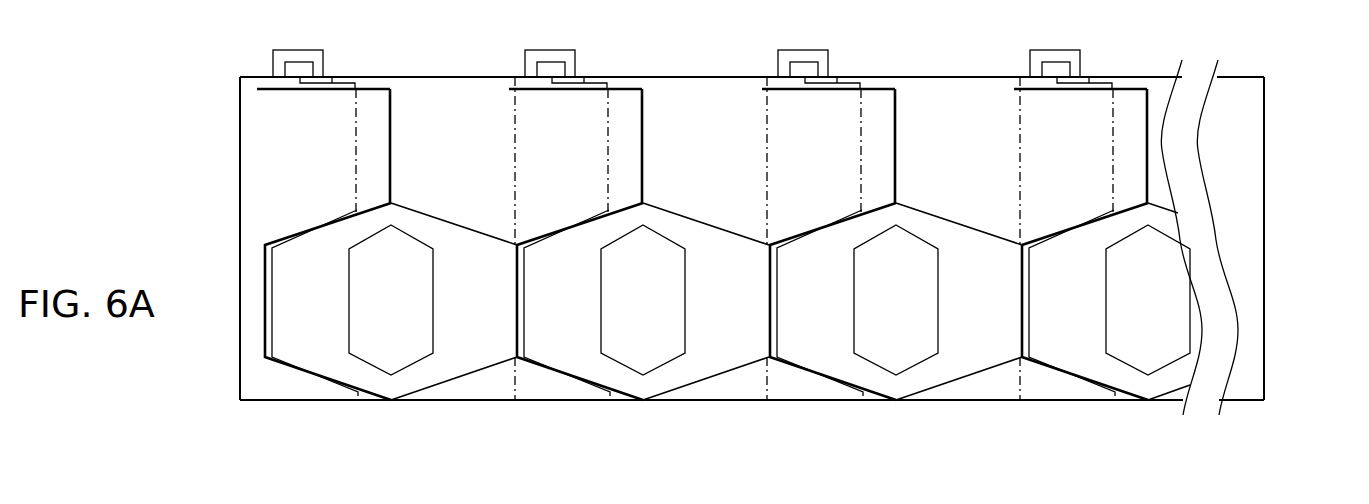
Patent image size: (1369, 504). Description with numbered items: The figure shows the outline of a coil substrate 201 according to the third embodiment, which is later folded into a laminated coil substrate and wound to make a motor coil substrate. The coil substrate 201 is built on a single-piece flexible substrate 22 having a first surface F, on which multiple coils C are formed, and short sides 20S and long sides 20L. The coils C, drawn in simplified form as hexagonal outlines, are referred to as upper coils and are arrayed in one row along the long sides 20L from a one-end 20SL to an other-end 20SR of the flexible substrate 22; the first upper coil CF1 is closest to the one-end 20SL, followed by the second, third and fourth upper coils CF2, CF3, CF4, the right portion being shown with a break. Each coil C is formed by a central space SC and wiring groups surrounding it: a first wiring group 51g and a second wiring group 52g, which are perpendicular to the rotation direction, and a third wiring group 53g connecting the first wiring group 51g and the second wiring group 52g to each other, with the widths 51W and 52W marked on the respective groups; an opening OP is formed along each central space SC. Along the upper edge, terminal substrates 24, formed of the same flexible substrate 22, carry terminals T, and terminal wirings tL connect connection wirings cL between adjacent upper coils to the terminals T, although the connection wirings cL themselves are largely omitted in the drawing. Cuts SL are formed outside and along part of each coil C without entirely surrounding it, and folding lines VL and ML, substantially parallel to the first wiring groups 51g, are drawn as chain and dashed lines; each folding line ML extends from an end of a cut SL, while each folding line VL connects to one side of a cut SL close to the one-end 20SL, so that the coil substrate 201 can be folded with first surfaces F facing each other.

The short sides 20S is at (748, 266).
The one-end 20SL is at (240, 192).
The other-end 20SR is at (1285, 244).
The long sides 20L is at (371, 400).
The flexible substrate 22 is at (980, 77).
The coil substrate 201 is at (1130, 77).
The terminal substrates 24 is at (306, 62).
The terminals T is at (298, 62).
The terminal wirings tL is at (298, 83).
The connection wirings cL is at (333, 76).
The folding lines ML is at (360, 135).
The folding lines VL is at (513, 117).
The cuts SL is at (585, 232).
The first surface F is at (922, 97).
The first wiring group 51g is at (270, 283).
The second wiring group 52g is at (483, 273).
The third wiring group 53g is at (340, 215).
The width of first grid portion 51W is at (525, 260).
The width of second grid portion 52W is at (520, 323).
The central space SC is at (769, 364).
The opening OP is at (648, 418).
The coils C is at (799, 430).
The 1st upper coil CF1 is at (474, 370).
The 2nd upper coil CF2 is at (750, 364).
The 3rd upper coil CF3 is at (962, 378).
The 4th upper coil CF4 is at (1180, 388).